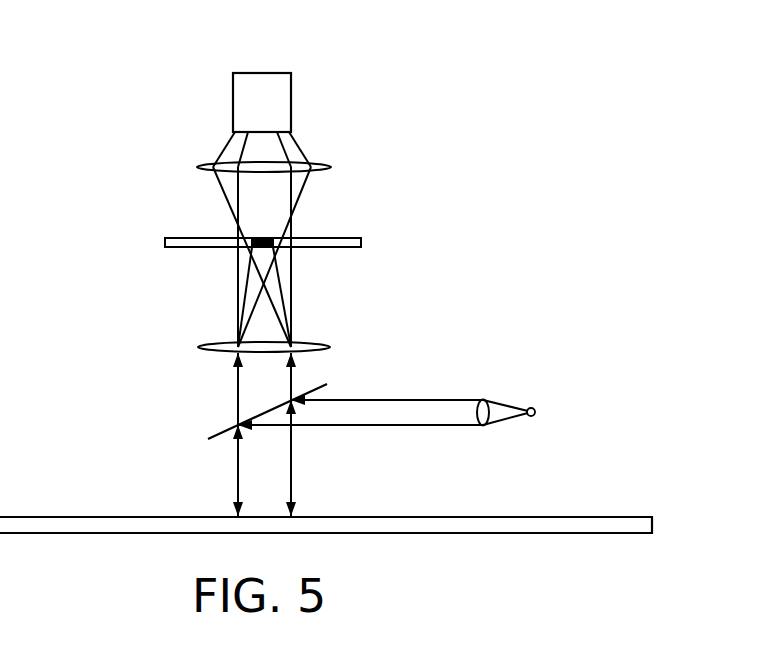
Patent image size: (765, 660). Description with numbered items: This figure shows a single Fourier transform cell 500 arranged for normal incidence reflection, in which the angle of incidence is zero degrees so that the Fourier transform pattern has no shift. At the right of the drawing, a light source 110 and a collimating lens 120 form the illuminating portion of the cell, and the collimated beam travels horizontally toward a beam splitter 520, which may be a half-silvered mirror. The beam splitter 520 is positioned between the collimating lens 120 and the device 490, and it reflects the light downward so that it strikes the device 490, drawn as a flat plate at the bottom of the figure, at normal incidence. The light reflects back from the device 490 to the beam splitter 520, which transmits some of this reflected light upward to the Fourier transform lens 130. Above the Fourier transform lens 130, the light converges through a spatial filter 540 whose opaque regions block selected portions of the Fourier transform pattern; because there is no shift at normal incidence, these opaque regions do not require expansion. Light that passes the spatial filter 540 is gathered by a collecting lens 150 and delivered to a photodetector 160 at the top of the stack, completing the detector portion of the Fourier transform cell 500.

The Fourier transform cell 500 is at (145, 87).
The photodetector 160 is at (293, 100).
The collecting lens 150 is at (328, 165).
The spatial filter 540 is at (378, 225).
The Fourier transform lens 130 is at (350, 332).
The beam splitter 520 is at (216, 441).
The collimating lens 120 is at (484, 426).
The light source 110 is at (533, 407).
The device 490 is at (588, 515).